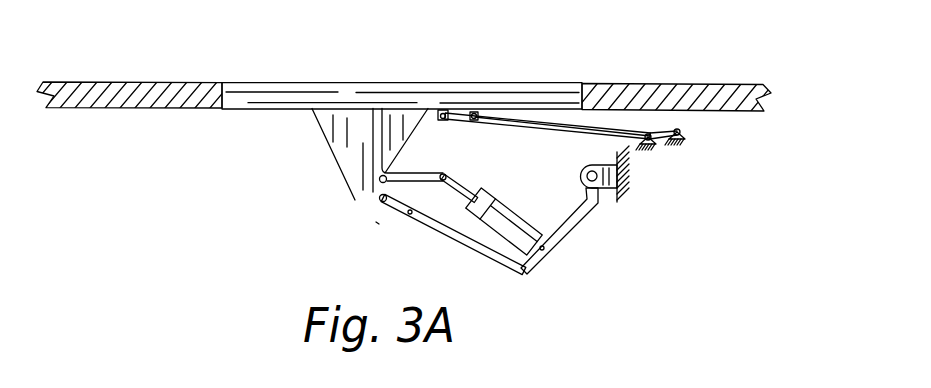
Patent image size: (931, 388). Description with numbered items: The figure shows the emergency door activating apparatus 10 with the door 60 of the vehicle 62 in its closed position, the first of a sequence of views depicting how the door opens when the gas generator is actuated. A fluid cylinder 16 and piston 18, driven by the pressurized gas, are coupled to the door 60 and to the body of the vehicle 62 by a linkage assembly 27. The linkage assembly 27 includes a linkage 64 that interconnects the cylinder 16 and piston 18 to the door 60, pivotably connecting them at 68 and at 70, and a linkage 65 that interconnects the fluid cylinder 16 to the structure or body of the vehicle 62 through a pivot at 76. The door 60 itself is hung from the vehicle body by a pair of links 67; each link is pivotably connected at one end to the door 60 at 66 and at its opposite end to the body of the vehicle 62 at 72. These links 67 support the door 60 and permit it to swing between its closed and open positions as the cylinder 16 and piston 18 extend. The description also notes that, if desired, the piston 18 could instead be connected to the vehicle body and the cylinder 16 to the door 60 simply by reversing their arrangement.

The emergency door activating apparatus 10 is at (182, 250).
The fluid cylinder 16 is at (494, 232).
The piston 18 is at (440, 196).
The linkage assembly 27 is at (300, 131).
The door 60 is at (443, 84).
The vehicle 62 is at (723, 84).
The linkage 64 is at (370, 231).
The linkage 65 is at (600, 222).
The pivot connection 66 is at (482, 136).
The links 67 is at (610, 122).
The pivot connection 68 is at (386, 175).
The pivot connection 70 is at (379, 201).
The pivot connection 72 is at (706, 133).
The pivot connection 76 is at (582, 170).